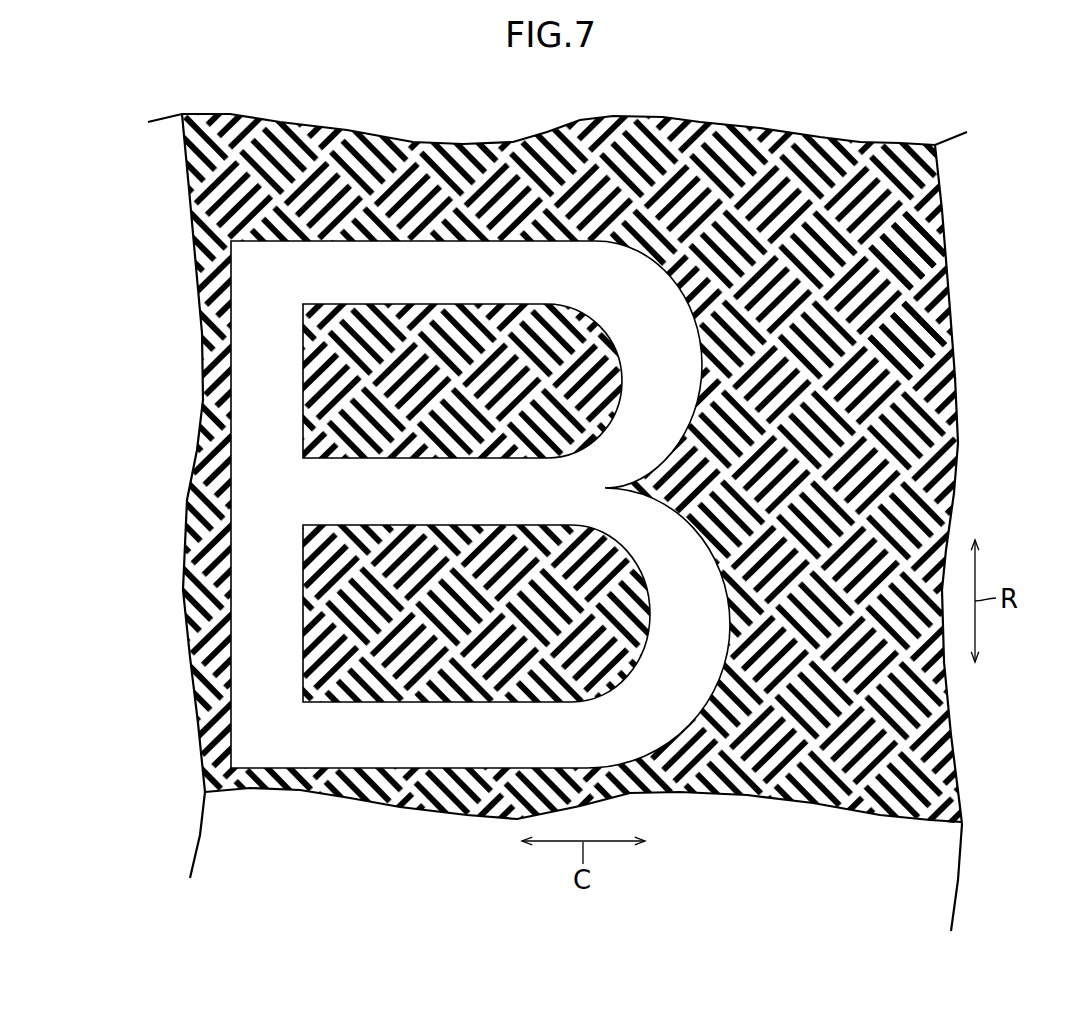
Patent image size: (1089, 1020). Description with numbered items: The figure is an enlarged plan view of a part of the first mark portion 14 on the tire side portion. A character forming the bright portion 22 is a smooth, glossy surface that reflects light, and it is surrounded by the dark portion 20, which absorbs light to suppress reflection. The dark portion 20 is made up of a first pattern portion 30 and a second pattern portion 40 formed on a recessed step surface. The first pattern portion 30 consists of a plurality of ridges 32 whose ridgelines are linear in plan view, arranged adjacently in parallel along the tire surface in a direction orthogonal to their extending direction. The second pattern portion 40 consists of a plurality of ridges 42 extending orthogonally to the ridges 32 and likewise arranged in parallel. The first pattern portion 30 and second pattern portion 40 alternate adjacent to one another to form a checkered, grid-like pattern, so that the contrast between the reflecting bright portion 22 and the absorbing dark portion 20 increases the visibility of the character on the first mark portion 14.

The first mark portion 14 is at (176, 81).
The dark portion 20 is at (863, 144).
The bright portion 22 is at (333, 740).
The first pattern portion 30 is at (913, 352).
The ridges 32 is at (917, 312).
The second pattern portion 40 is at (890, 250).
The ridges 42 is at (917, 247).